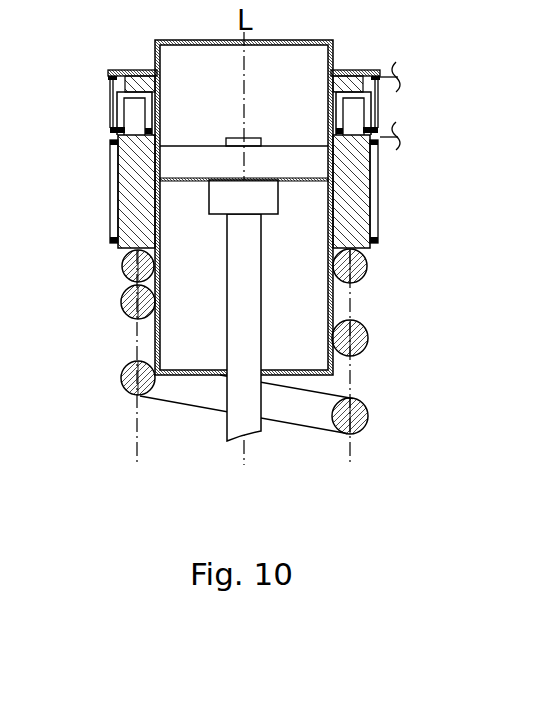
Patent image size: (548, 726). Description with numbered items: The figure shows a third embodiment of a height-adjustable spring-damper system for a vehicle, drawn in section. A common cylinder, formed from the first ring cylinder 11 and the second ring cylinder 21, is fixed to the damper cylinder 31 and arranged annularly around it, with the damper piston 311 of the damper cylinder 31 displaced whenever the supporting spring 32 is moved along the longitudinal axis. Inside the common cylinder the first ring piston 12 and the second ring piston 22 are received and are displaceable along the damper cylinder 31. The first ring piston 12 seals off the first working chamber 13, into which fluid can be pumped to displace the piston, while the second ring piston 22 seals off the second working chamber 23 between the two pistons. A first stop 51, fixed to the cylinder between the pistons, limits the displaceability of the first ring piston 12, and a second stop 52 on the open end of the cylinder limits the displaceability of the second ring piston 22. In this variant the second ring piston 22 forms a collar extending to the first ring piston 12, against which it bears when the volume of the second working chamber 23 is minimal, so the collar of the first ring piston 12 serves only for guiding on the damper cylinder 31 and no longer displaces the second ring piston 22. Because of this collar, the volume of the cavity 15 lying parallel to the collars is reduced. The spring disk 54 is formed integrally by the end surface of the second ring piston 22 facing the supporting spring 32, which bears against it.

The first ring cylinder 11 is at (109, 75).
The first ring piston 12 is at (133, 86).
The first working chamber 13 is at (111, 58).
The cavity 15 is at (121, 118).
The second ring cylinder 21 is at (110, 192).
The second ring piston 22 is at (120, 203).
The second working chamber 23 is at (104, 146).
The damper cylinder 31 is at (155, 333).
The damper piston 311 is at (192, 160).
The supporting spring 32 is at (143, 397).
The first stop 51 is at (372, 130).
The second stop 52 is at (112, 241).
The spring disk 54 is at (365, 255).